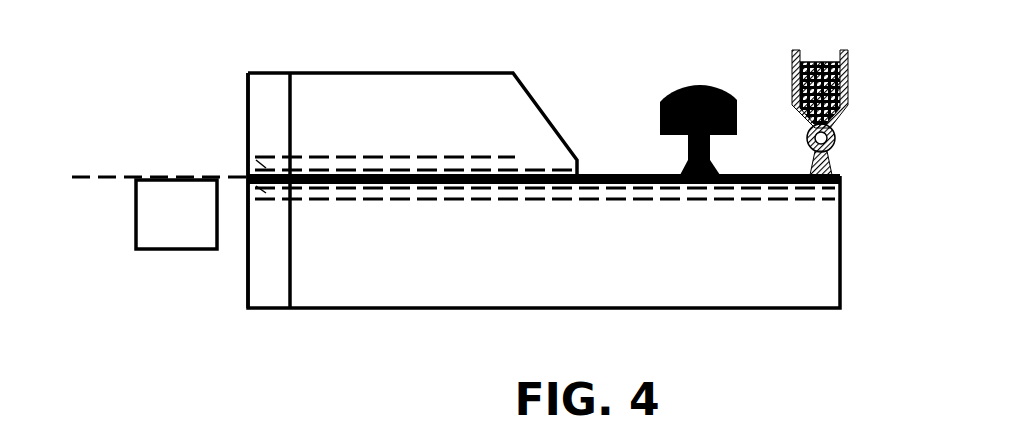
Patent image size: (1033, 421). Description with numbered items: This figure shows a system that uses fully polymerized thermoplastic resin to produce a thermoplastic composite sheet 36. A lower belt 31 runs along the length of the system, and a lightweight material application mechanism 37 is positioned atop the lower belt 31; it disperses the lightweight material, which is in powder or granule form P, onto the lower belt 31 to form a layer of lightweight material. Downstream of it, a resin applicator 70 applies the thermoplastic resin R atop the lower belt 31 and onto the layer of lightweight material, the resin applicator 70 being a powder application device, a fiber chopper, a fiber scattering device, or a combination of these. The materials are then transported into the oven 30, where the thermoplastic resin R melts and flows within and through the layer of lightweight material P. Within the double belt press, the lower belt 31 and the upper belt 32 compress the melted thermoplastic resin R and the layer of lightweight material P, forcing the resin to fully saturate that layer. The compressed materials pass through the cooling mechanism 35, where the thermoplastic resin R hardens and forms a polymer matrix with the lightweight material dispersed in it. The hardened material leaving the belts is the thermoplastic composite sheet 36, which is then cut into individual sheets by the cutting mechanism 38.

The oven 30 is at (400, 292).
The lower belt 31 is at (472, 204).
The upper belt 32 is at (360, 158).
The cooling mechanism 35 is at (274, 84).
The thermoplastic composite sheet 36 is at (227, 175).
The lightweight material application mechanism 37 is at (850, 91).
The cutting mechanism 38 is at (180, 225).
The resin applicator 70 is at (650, 88).
The thermoplastic resin R is at (724, 150).
The lightweight material powder P is at (848, 157).